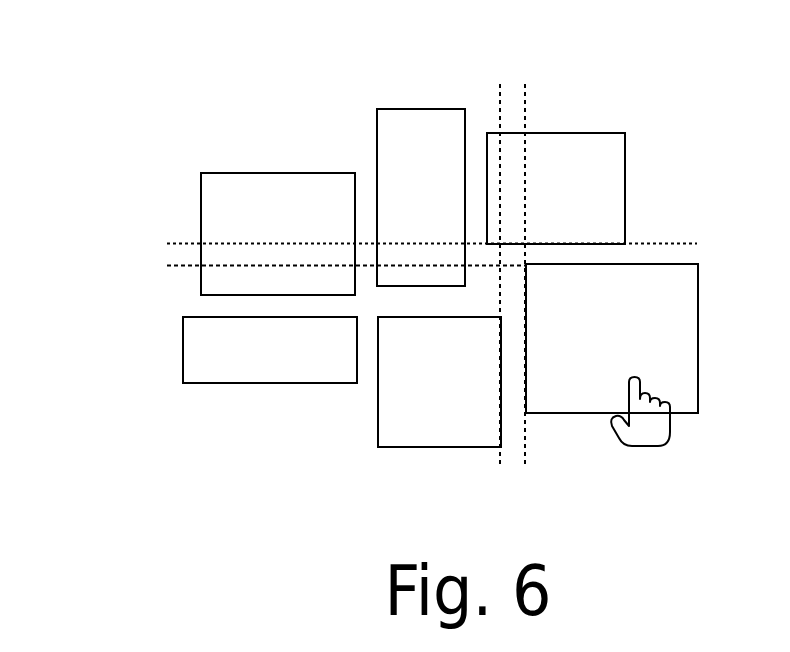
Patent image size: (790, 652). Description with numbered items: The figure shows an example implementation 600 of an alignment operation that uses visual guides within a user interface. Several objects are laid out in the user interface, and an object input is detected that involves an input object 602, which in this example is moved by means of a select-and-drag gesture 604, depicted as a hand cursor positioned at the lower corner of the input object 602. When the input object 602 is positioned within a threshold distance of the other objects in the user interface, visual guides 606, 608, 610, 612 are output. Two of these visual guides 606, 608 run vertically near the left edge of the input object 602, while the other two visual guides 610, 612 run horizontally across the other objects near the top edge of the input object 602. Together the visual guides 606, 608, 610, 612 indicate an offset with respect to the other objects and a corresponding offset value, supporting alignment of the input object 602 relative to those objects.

The example implementation 600 is at (150, 72).
The input object 602 is at (592, 350).
The select-and-drag gesture 604 is at (647, 437).
The visual guide 606 is at (500, 468).
The visual guide 608 is at (525, 468).
The visual guide 610 is at (178, 243).
The visual guide 612 is at (178, 265).